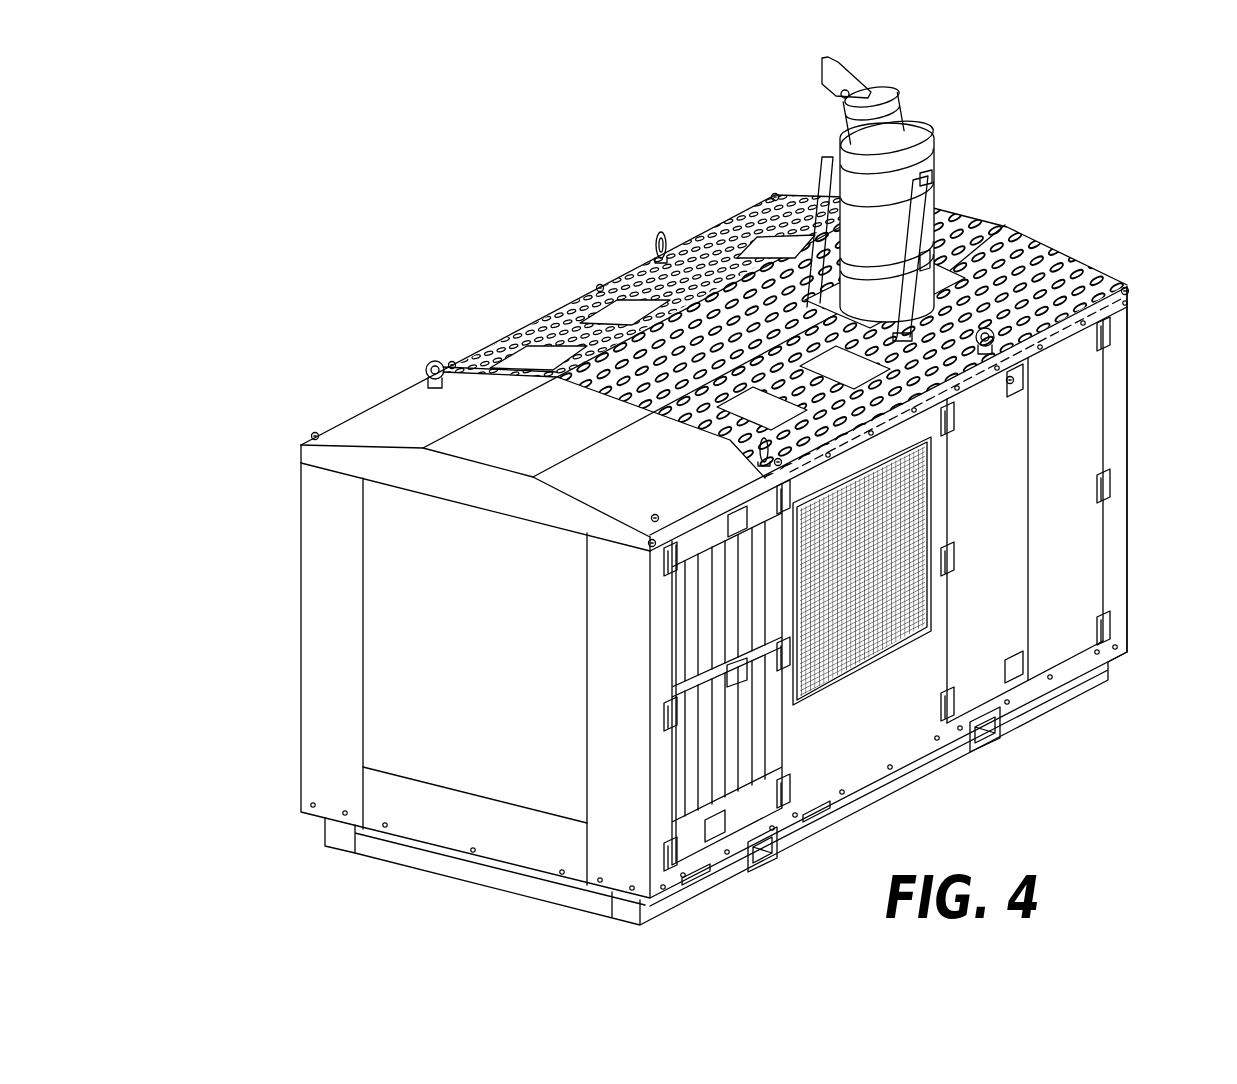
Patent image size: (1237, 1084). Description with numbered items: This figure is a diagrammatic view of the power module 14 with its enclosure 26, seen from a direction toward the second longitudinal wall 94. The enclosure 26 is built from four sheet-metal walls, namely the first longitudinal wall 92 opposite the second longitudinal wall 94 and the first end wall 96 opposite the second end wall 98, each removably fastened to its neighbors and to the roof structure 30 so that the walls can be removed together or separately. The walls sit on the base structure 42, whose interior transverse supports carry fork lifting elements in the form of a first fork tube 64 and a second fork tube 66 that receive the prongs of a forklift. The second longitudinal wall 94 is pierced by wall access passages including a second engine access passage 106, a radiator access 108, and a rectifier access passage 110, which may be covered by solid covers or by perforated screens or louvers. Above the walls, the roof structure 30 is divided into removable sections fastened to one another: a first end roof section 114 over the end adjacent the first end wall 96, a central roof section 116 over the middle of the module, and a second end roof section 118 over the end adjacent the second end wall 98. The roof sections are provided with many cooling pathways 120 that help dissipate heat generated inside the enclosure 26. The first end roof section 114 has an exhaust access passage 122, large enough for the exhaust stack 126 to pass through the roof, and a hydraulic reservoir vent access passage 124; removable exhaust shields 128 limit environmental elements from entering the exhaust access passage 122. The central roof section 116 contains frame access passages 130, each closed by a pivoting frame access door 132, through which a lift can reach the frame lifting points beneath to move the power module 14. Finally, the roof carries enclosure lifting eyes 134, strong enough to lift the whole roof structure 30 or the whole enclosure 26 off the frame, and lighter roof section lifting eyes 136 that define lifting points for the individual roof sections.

The power module 14 is at (1085, 118).
The enclosure 26 is at (1128, 528).
The roof structure 30 is at (311, 450).
The base structure 42 is at (665, 905).
The first fork tube 64 is at (985, 733).
The second fork tube 66 is at (760, 855).
The first longitudinal wall 92 is at (258, 573).
The second longitudinal wall 94 is at (905, 748).
The first end wall 96 is at (1152, 420).
The second end wall 98 is at (476, 659).
The second engine access passage 106 is at (1085, 660).
The radiator access 108 is at (912, 650).
The rectifier access passage 110 is at (790, 745).
The first end roof section 114 is at (690, 180).
The central roof section 116 is at (500, 270).
The second end roof section 118 is at (353, 347).
The cooling pathways 120 is at (1040, 270).
The exhaust access passage 122 is at (963, 235).
The hydraulic reservoir vent access passage 124 is at (770, 240).
The exhaust stack 126 is at (945, 138).
The removable exhaust shield 128 is at (955, 300).
The frame access passages 130 is at (560, 372).
The frame access door 132 is at (620, 312).
The enclosure lifting eyes 134 is at (658, 240).
The roof section lifting eyes 136 is at (1129, 290).